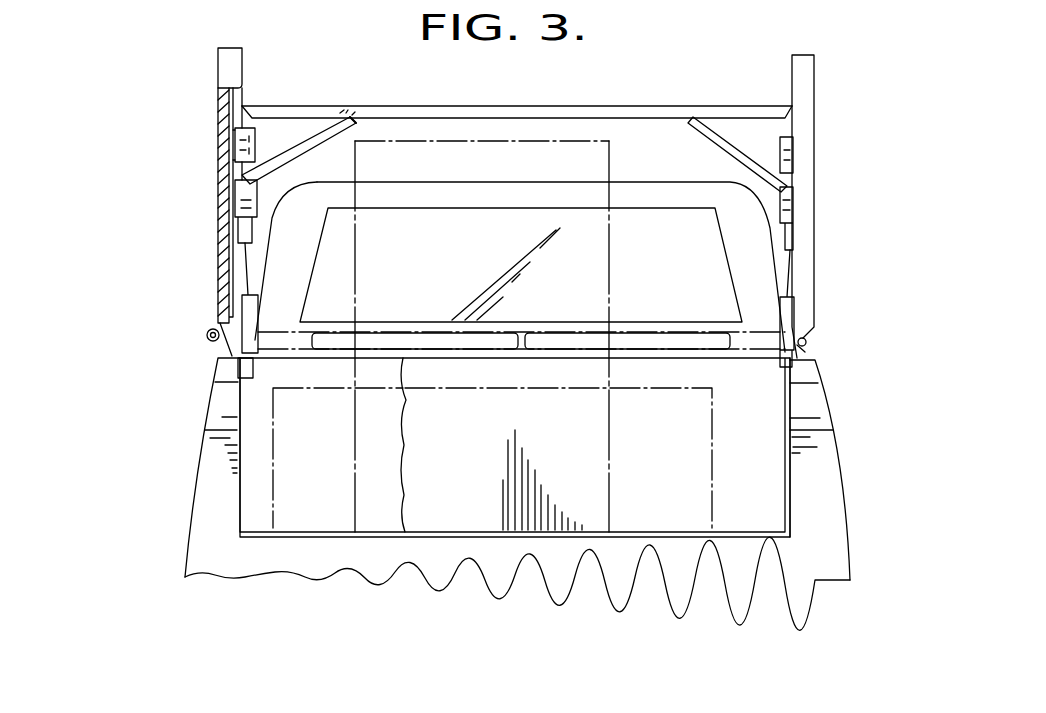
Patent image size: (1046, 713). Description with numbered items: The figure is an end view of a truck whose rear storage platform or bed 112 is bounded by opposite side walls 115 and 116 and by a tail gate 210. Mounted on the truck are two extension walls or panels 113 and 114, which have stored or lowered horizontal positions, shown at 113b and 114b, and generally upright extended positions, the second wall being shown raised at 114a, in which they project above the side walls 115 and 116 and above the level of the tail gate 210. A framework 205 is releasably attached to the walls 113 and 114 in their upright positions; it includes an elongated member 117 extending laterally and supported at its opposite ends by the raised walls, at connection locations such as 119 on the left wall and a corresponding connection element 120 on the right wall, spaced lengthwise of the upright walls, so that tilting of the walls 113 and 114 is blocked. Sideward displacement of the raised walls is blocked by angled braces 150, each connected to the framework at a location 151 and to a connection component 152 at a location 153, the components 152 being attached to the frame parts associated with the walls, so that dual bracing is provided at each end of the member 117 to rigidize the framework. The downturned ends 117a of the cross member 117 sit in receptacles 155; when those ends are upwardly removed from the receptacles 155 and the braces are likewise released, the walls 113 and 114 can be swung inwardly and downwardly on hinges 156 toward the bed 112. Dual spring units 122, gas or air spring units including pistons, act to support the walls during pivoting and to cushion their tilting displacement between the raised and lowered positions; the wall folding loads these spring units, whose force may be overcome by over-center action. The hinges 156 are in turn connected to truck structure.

The bed 112 is at (306, 526).
The extension wall 113 is at (213, 250).
The lowered horizontal position of extension wall 113b is at (467, 348).
The extension wall 114 is at (854, 206).
The upright extended position of extension wall 114a is at (807, 257).
The lowered horizontal position of extension wall 114b is at (580, 345).
The side wall 115 is at (183, 476).
The side wall 116 is at (848, 440).
The elongated member 117 is at (533, 106).
The downturned end 117a is at (243, 150).
The connection location 119 is at (232, 133).
The second mounting bracket 120 is at (786, 152).
The spring unit 122 is at (266, 310).
The angled brace 150 is at (310, 128).
The brace connection location 151 is at (354, 120).
The connection component 152 is at (253, 187).
The brace connection location 153 is at (247, 180).
The receptacle 155 is at (257, 136).
The hinge 156 is at (208, 335).
The framework 205 is at (679, 98).
The tail gate 210 is at (760, 486).